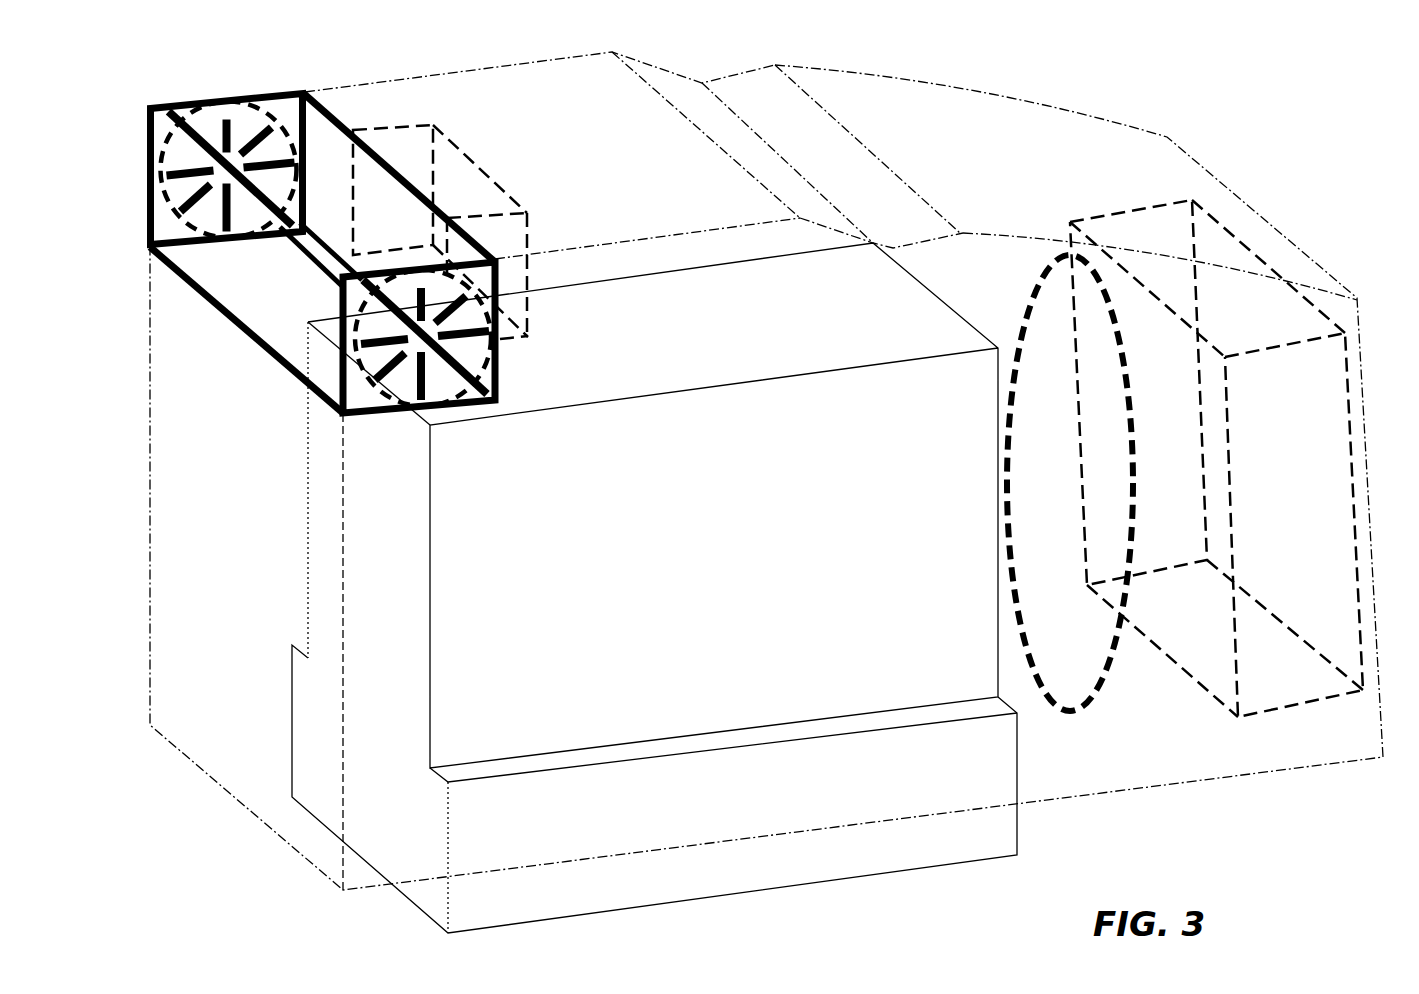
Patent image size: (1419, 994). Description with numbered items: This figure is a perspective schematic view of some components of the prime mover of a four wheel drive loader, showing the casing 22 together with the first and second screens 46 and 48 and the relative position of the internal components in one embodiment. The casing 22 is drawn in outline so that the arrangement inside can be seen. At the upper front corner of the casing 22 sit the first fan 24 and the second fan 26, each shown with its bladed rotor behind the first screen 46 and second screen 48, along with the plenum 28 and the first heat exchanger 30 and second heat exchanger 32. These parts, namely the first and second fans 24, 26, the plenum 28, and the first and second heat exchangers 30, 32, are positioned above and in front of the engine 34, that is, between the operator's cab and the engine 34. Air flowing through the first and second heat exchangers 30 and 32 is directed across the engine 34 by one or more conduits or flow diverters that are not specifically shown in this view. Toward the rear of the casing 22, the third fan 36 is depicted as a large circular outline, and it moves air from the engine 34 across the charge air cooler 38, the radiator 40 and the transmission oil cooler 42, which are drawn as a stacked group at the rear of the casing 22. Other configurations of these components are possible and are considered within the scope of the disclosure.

The casing 22 is at (1123, 152).
The first fan 24 is at (391, 295).
The second fan 26 is at (237, 153).
The plenum 28 is at (268, 298).
The first heat exchanger 30 is at (405, 153).
The second heat exchanger 32 is at (452, 167).
The engine 34 is at (943, 857).
The third fan 36 is at (1087, 647).
The charge air cooler 38 is at (1257, 690).
The radiator 40 is at (1295, 690).
The transmission oil cooler 42 is at (1333, 690).
The first screen 46 is at (403, 398).
The second screen 48 is at (262, 112).